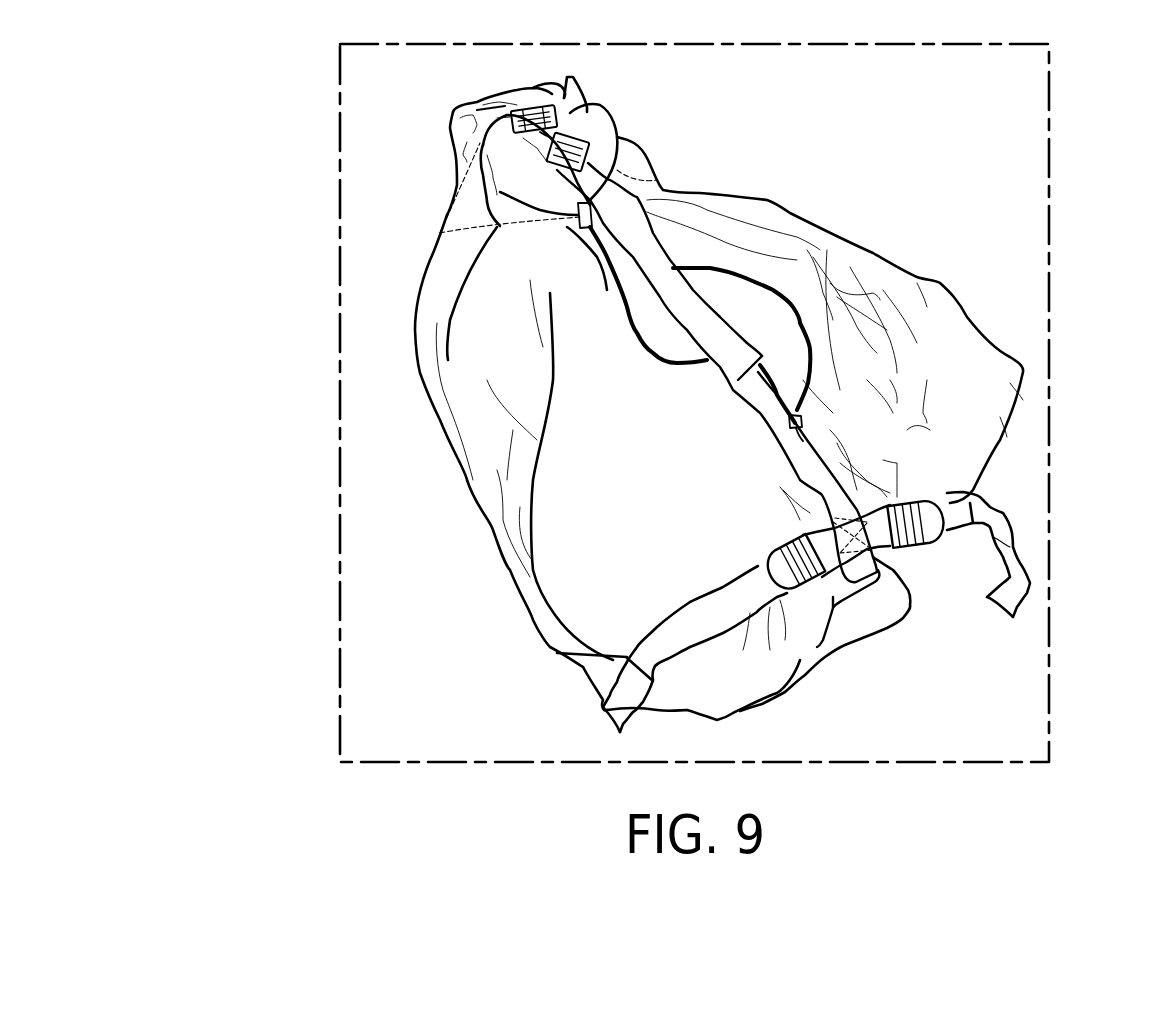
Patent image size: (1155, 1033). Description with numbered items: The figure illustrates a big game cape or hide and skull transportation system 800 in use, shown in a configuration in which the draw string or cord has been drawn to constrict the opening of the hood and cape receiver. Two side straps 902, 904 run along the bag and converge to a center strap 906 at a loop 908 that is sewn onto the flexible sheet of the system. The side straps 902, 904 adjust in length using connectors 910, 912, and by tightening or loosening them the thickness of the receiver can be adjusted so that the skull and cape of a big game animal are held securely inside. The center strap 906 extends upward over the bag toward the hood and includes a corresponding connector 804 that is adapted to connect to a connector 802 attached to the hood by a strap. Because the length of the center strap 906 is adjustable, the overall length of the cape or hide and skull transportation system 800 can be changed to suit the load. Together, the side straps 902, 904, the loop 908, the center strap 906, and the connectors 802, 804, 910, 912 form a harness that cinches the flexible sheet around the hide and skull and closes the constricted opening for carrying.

The cape or hide and skull transportation system 800 is at (284, 624).
The connector 802 is at (561, 131).
The corresponding connector 804 is at (590, 175).
The side strap 902 is at (617, 710).
The side strap 904 is at (1017, 533).
The center strap 906 is at (858, 590).
The loop 908 is at (877, 553).
The connector 910 is at (795, 580).
The connector 912 is at (933, 521).